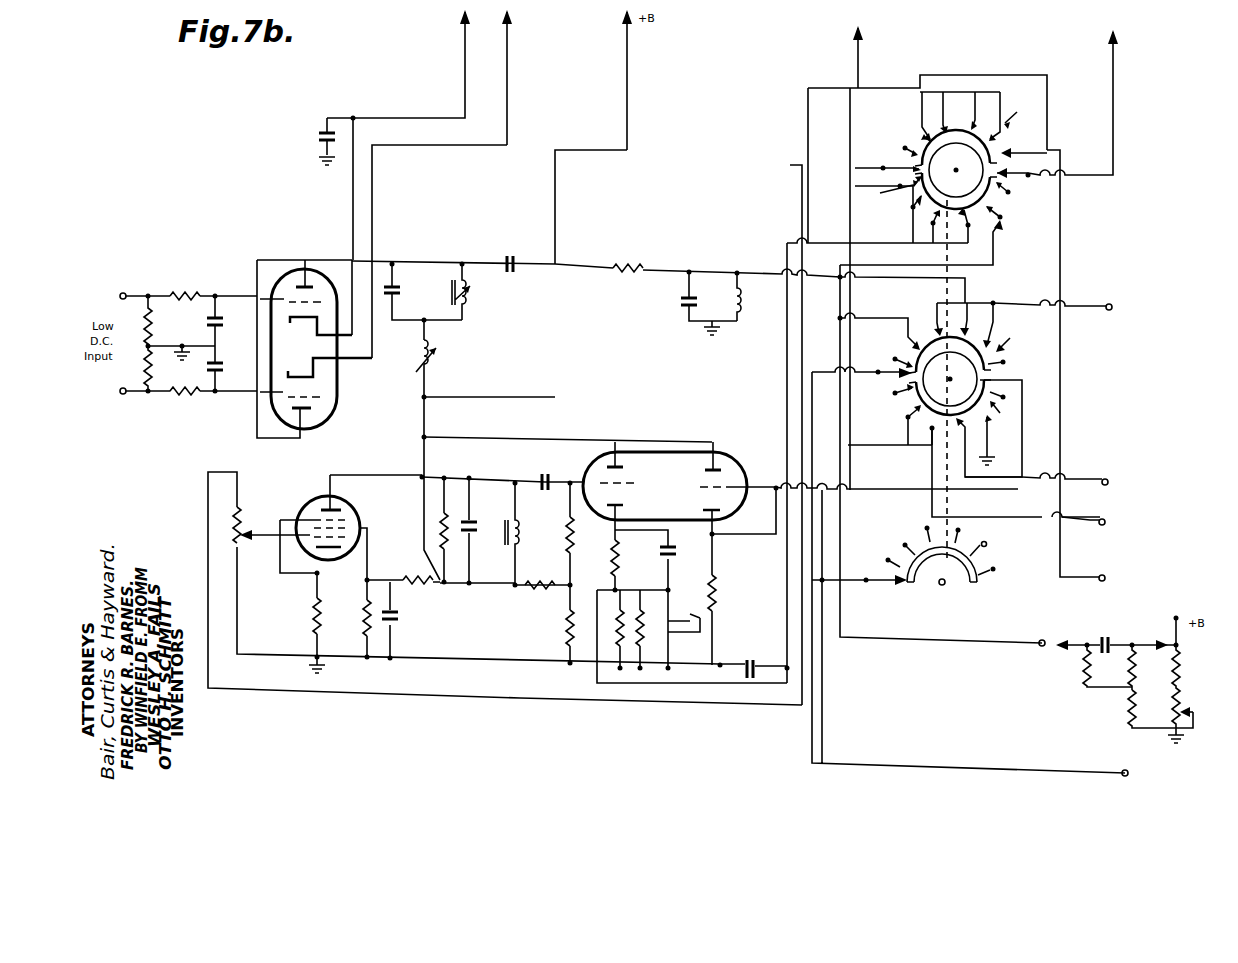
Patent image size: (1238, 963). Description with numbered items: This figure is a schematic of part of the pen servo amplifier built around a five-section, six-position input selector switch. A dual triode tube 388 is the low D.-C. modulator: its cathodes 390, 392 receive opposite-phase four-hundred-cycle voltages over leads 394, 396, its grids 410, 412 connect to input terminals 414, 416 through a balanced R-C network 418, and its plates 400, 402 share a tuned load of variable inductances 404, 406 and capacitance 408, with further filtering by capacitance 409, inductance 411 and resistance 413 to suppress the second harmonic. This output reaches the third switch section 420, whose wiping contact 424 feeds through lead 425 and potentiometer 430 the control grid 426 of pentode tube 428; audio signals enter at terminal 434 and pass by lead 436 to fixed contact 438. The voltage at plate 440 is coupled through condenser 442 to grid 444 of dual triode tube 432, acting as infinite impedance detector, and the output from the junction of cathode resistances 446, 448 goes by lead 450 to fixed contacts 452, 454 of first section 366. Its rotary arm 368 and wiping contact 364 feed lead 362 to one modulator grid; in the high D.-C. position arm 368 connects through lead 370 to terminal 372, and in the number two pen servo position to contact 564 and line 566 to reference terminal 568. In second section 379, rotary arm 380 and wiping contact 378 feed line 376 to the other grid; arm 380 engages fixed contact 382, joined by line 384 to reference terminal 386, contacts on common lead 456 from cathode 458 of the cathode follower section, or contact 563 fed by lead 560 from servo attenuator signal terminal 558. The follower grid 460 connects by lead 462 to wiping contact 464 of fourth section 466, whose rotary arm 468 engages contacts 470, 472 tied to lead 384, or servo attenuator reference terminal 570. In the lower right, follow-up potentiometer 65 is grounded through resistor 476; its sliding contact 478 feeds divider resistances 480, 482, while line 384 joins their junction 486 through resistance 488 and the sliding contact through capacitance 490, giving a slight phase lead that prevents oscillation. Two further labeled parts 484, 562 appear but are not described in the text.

The lead 362 is at (858, 60).
The wiping contact 364 is at (897, 168).
The first section of rotary switch 366 is at (1032, 110).
The rotary arm 368 is at (986, 136).
The lead 370 is at (1062, 376).
The terminal 372 is at (1102, 575).
The line 376 is at (1118, 72).
The wiping contact 378 is at (1024, 195).
The second section of rotary switch 379 is at (1002, 223).
The rotary arm 380 is at (972, 243).
The fixed contact 382 is at (912, 188).
The line 384 is at (843, 513).
The terminal 386 is at (1017, 644).
The dual triode vacuum tube 388 is at (303, 268).
The cathode 390 is at (290, 322).
The cathode 392 is at (290, 373).
The lead 394 is at (410, 118).
The lead 396 is at (470, 150).
The plate 400 is at (316, 264).
The plate 402 is at (325, 410).
The variable inductance 404 is at (436, 356).
The variable inductance 406 is at (470, 296).
The capacitance 408 is at (400, 290).
The parallel capacitance 409 is at (628, 264).
The grid 410 is at (290, 328).
The inductance 411 is at (672, 306).
The grid 412 is at (268, 410).
The resistance 413 is at (742, 305).
The input terminal 414 is at (123, 292).
The input terminal 416 is at (123, 395).
The balanced R-C network 418 is at (183, 291).
The third section of rotary switch 420 is at (1026, 338).
The wiping contact 424 is at (890, 362).
The lead 425 is at (500, 700).
The control grid 426 is at (302, 512).
The pentode vacuum tube 428 is at (308, 503).
The potentiometer 430 is at (244, 545).
The dual triode vacuum tube 432 is at (800, 468).
The audio input terminal 434 is at (1110, 304).
The lead 436 is at (1005, 307).
The fixed contact 438 is at (1002, 332).
The plate 440 is at (319, 571).
The condenser 442 is at (542, 472).
The grid 444 is at (630, 486).
The cathode resistance 446 is at (612, 552).
The cathode resistance 448 is at (620, 592).
The lead 450 is at (790, 166).
The fixed contact 452 is at (998, 150).
The fixed contact 454 is at (980, 130).
The common lead 456 is at (880, 236).
The cathode 458 is at (722, 540).
The grid 460 is at (700, 488).
The lead 462 is at (880, 490).
The wiping contact 464 is at (1006, 362).
The fourth section of rotary switch 466 is at (1005, 420).
The rotary arm 468 is at (958, 389).
The fixed contact 470 is at (905, 414).
The fixed contact 472 is at (930, 426).
The resistor 476 is at (1193, 708).
The sliding contact 478 is at (1150, 645).
The voltage divider resistance 480 is at (1137, 676).
The voltage divider resistance 482 is at (1122, 720).
The capacitor 484 is at (1092, 640).
The junction 486 is at (1128, 695).
The resistance 488 is at (1082, 680).
The capacitance 490 is at (1136, 641).
The follow-up potentiometer 65 is at (1182, 655).
The servo attenuator signal input terminal 558 is at (1120, 768).
The lead 560 is at (920, 763).
The switch contact 562 is at (908, 345).
The fixed contact 563 is at (1002, 217).
The fixed contact 564 is at (925, 137).
The line 566 is at (1048, 120).
The high D.-C. reference terminal 568 is at (1102, 519).
The servo attenuator reference input terminal 570 is at (1105, 479).